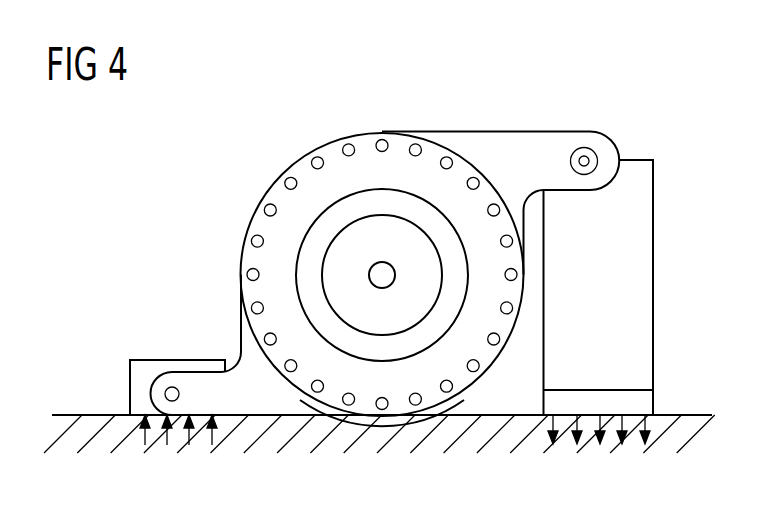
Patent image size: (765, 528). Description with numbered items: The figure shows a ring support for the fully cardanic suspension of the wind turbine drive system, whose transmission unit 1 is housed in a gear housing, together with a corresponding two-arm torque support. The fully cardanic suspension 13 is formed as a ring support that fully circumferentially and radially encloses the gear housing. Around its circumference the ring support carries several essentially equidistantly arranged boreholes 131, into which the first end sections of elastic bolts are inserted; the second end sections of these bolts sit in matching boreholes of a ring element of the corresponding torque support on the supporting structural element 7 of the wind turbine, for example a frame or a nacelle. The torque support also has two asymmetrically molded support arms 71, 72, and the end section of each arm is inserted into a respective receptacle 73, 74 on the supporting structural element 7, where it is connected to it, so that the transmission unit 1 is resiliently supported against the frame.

The transmission unit 1 is at (316, 199).
The fully cardanic suspension 13 is at (395, 406).
The boreholes 131 is at (345, 140).
The supporting structural element 7 is at (694, 425).
The support arm 71 is at (187, 370).
The support arm 72 is at (555, 130).
The receptacle 73 is at (150, 396).
The receptacle 74 is at (653, 252).